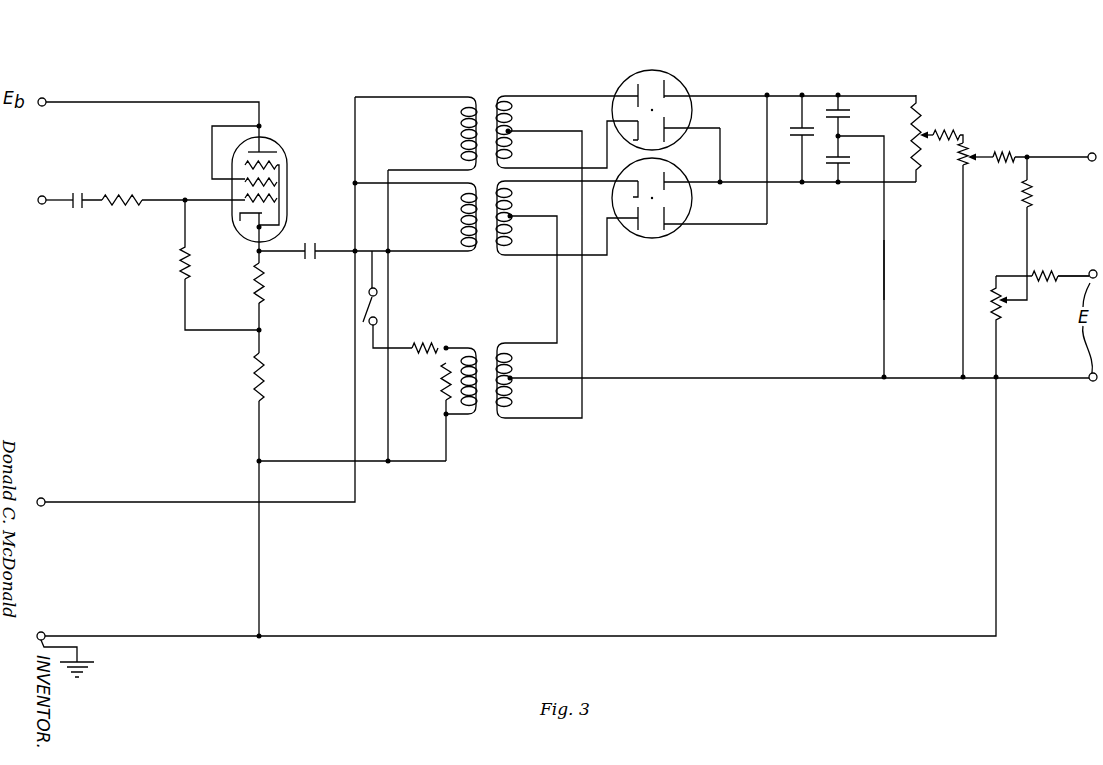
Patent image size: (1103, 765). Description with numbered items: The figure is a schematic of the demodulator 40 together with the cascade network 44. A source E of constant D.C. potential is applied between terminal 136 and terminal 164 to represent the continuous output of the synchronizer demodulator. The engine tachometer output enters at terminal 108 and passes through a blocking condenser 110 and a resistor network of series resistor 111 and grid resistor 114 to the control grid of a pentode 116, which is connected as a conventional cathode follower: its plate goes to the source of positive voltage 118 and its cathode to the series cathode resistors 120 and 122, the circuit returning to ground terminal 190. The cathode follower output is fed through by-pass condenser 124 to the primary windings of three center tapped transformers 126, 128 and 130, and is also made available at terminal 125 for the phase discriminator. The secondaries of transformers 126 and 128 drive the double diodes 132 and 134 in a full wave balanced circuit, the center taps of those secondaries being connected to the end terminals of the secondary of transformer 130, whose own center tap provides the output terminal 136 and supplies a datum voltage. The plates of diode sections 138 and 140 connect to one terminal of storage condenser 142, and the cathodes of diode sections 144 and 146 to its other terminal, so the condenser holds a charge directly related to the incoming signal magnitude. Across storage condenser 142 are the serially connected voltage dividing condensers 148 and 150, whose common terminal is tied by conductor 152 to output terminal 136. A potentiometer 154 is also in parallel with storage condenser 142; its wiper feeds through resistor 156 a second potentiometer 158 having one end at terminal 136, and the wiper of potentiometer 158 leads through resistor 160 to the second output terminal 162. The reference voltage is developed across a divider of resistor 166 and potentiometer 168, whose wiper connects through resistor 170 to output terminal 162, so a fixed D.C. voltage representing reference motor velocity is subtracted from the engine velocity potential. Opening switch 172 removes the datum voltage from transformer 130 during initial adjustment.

The demodulator 40 is at (515, 568).
The cascade network 44 is at (1005, 43).
The terminal 108 is at (42, 196).
The blocking condenser 110 is at (88, 197).
The series resistor 111 is at (133, 206).
The grid resistor 114 is at (180, 270).
The pentode 116 is at (280, 152).
The source of positive voltage 118 is at (45, 99).
The cathode resistor 120 is at (266, 290).
The cathode resistor 122 is at (265, 378).
The by-pass condenser 124 is at (304, 242).
The terminal 125 is at (44, 499).
The center tapped transformer 126 is at (484, 110).
The center tapped transformer 128 is at (484, 222).
The center tapped transformer 130 is at (484, 393).
The double diode 132 is at (647, 78).
The double diode 134 is at (651, 246).
The output terminal 136 is at (1090, 382).
The diode section 138 is at (682, 127).
The diode section 140 is at (682, 188).
The storage condenser 142 is at (808, 140).
The diode section 144 is at (678, 95).
The diode section 146 is at (672, 232).
The voltage dividing condenser 148 is at (850, 113).
The voltage dividing condenser 150 is at (850, 161).
The conductor 152 is at (888, 265).
The potentiometer 154 is at (928, 123).
The resistor 156 is at (950, 133).
The potentiometer 158 is at (978, 150).
The resistor 160 is at (1008, 160).
The output terminal 162 is at (1088, 160).
The terminal 164 is at (1090, 270).
The resistor 166 is at (1046, 285).
The potentiometer 168 is at (983, 314).
The resistor 170 is at (1034, 195).
The switch 172 is at (388, 307).
The ground terminal 190 is at (46, 632).